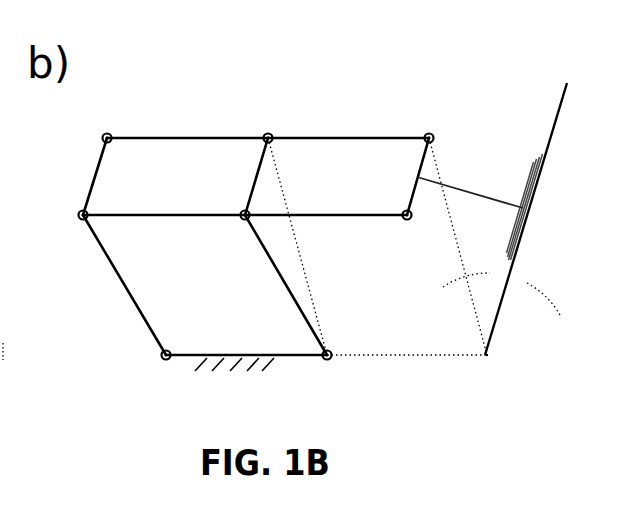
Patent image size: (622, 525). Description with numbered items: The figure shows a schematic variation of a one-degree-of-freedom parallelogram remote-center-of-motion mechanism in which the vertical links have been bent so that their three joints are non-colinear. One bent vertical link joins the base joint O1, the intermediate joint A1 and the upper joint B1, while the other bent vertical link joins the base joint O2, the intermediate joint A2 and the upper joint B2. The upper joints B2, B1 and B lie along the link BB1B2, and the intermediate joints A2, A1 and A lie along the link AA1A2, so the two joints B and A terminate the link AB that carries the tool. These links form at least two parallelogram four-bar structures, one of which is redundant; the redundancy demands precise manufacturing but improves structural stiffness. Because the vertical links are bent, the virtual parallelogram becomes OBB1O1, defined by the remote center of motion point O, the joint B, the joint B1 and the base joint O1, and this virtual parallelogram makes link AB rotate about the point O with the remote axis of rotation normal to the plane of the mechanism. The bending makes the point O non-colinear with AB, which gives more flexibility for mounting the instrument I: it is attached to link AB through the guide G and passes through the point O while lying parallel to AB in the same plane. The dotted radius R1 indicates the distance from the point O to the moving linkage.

The joint B2 is at (119, 111).
The joint B1 is at (280, 111).
The joint B is at (414, 111).
The joint A2 is at (79, 247).
The joint A1 is at (239, 247).
The joint A is at (396, 241).
The joint O2 is at (144, 385).
The joint O1 is at (359, 385).
The remote center of motion point O is at (498, 401).
The instrument I is at (526, 218).
The guide G is at (470, 180).
The radius R1 about RCM R1 is at (480, 307).